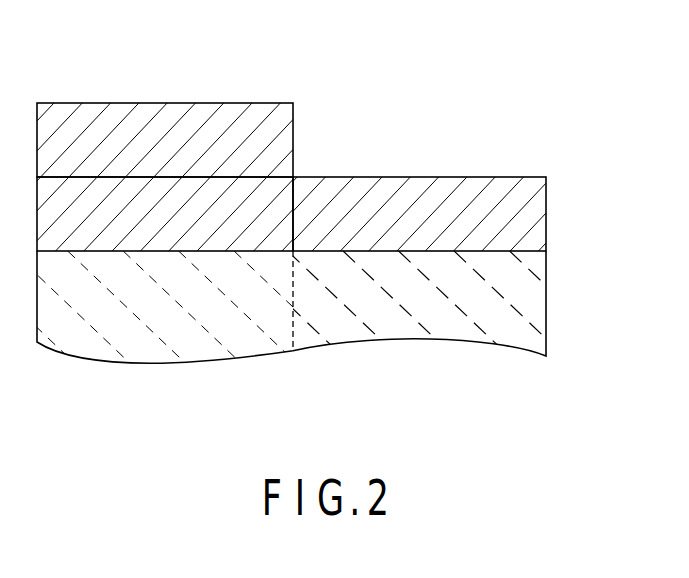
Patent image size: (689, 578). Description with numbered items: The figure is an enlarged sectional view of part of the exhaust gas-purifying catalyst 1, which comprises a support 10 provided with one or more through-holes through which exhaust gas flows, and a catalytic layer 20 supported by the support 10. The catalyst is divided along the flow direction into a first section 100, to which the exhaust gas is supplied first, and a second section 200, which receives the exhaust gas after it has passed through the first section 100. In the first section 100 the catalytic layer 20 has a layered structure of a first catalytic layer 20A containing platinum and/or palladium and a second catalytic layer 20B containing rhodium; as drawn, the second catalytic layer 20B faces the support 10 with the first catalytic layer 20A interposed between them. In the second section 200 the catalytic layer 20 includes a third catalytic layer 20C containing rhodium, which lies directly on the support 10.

The exhaust gas-purifying catalyst 1 is at (503, 78).
The support 10 is at (546, 303).
The catalytic layer 20 is at (553, 103).
The first catalytic layer 20A is at (186, 228).
The second catalytic layer 20B is at (186, 155).
The third catalytic layer 20C is at (402, 228).
The first section 100 is at (37, 370).
The second section 200 is at (293, 370).